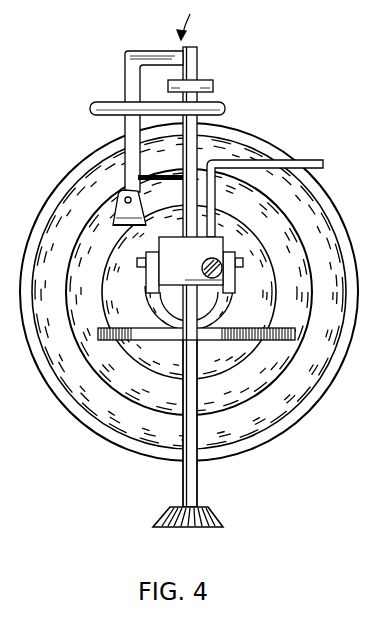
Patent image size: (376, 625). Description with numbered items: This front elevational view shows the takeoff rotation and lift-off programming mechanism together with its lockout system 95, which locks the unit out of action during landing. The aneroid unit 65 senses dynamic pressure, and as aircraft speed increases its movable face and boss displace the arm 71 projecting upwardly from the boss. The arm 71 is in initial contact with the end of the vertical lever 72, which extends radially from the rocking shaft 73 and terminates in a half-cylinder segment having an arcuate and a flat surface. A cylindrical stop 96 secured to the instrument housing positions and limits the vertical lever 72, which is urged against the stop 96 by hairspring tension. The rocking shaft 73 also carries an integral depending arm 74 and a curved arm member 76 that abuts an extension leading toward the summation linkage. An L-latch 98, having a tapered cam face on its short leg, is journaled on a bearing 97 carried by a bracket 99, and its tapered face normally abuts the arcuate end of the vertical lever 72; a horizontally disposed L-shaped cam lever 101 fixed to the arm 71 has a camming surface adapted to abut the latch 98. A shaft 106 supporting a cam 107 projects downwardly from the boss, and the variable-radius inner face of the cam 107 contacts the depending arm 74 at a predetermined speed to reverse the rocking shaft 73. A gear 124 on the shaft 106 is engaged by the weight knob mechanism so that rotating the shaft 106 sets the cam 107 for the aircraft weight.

The aneroid unit 65 is at (320, 396).
The arm 71 is at (202, 80).
The vertical lever 72 is at (198, 147).
The rocking shaft 73 is at (193, 261).
The depending arm 74 is at (198, 351).
The curved arm member 76 is at (303, 160).
The lockout system 95 is at (196, 20).
The cylindrical stop 96 is at (208, 105).
The bearing 97 is at (119, 197).
The L-latch 98 is at (124, 62).
The bracket 99 is at (119, 226).
The L-shaped cam lever 101 is at (157, 173).
The shaft 106 is at (198, 475).
The cam 107 is at (274, 341).
The gear 124 is at (216, 519).